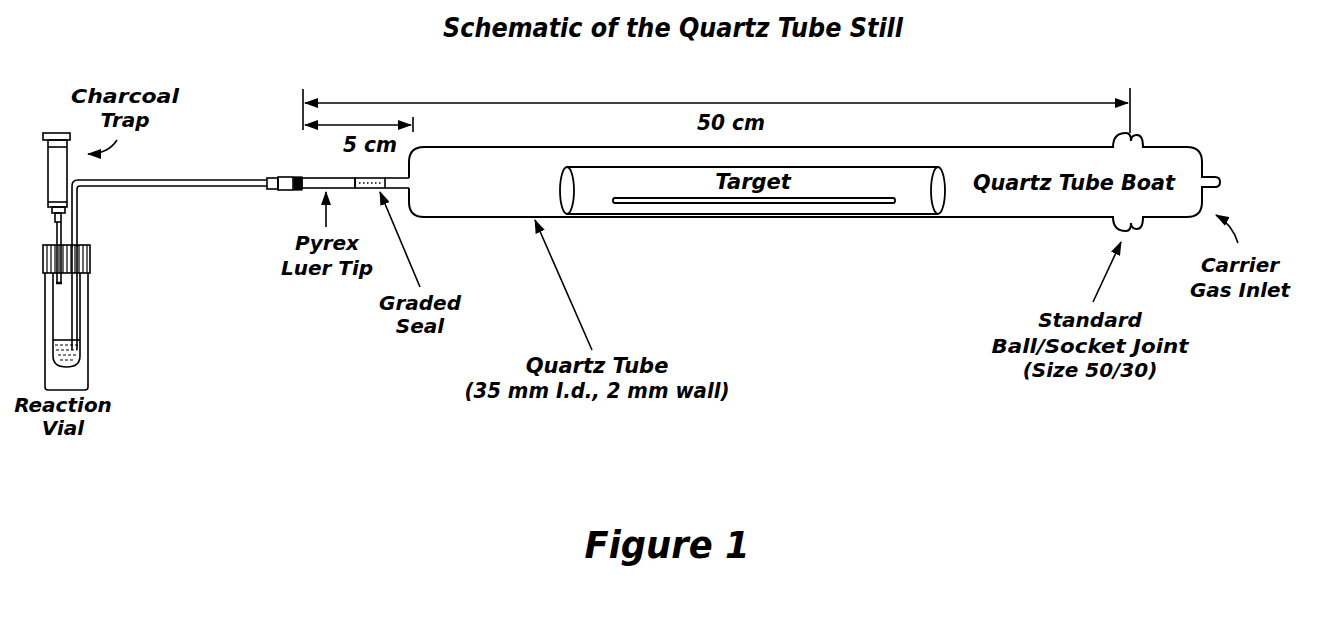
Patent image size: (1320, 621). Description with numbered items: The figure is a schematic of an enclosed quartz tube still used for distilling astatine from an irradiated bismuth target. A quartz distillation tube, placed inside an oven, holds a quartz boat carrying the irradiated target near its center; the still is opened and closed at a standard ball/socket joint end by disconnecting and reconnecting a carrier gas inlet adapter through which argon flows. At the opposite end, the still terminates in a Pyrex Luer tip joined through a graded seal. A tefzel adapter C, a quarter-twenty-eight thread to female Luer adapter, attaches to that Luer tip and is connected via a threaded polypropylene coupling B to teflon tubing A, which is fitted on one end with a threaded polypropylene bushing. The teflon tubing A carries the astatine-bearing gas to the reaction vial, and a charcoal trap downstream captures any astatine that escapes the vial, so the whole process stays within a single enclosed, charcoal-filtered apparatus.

The teflon tubing A is at (186, 190).
The coupling B is at (276, 175).
The tefzel adapter C is at (297, 174).